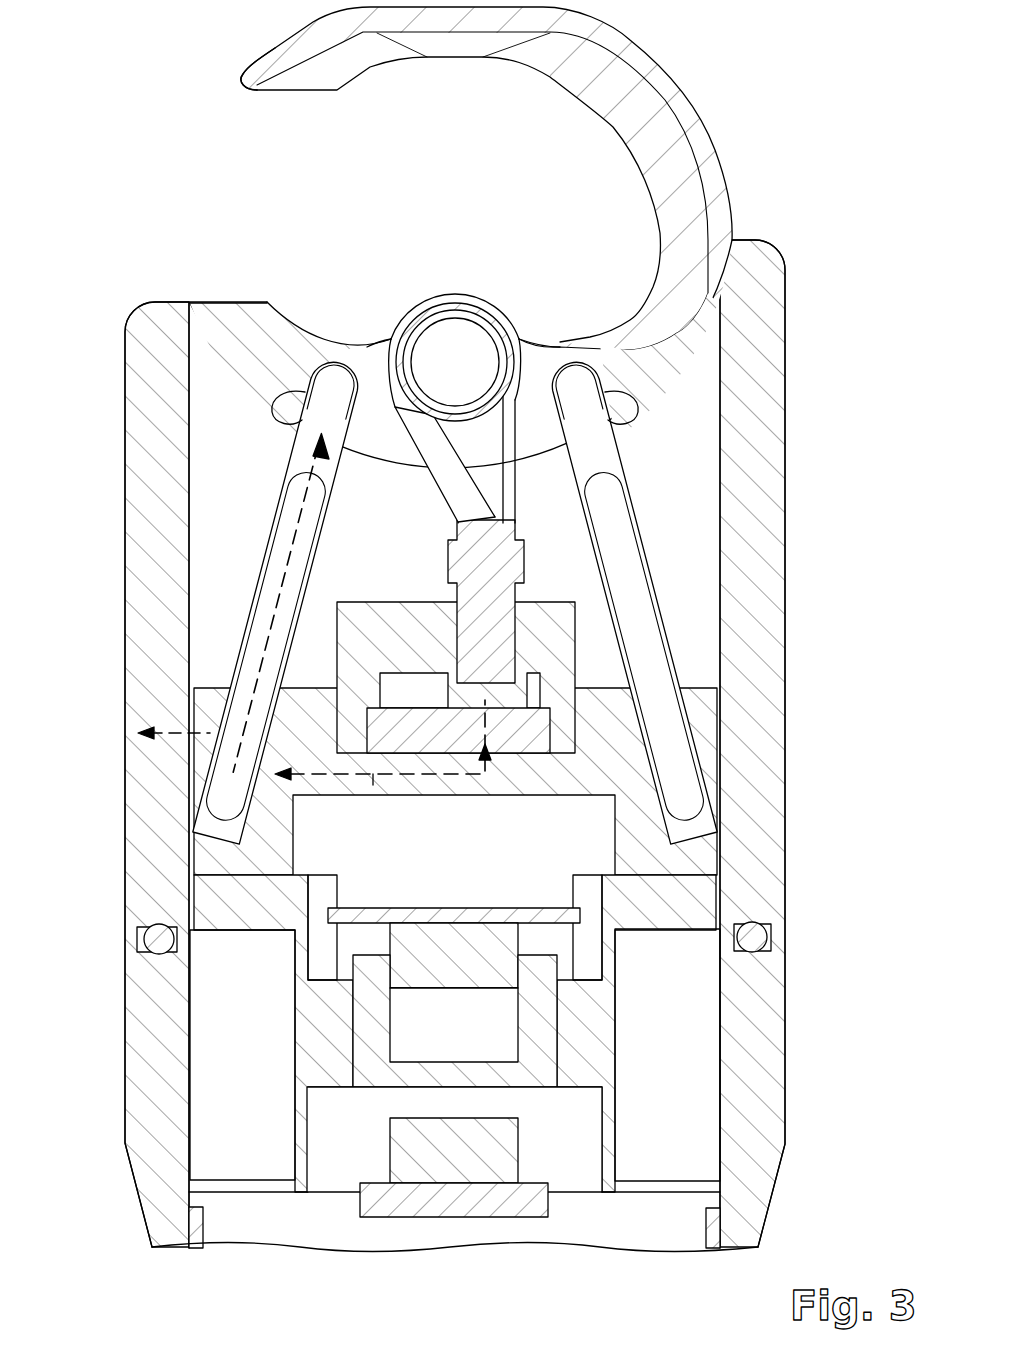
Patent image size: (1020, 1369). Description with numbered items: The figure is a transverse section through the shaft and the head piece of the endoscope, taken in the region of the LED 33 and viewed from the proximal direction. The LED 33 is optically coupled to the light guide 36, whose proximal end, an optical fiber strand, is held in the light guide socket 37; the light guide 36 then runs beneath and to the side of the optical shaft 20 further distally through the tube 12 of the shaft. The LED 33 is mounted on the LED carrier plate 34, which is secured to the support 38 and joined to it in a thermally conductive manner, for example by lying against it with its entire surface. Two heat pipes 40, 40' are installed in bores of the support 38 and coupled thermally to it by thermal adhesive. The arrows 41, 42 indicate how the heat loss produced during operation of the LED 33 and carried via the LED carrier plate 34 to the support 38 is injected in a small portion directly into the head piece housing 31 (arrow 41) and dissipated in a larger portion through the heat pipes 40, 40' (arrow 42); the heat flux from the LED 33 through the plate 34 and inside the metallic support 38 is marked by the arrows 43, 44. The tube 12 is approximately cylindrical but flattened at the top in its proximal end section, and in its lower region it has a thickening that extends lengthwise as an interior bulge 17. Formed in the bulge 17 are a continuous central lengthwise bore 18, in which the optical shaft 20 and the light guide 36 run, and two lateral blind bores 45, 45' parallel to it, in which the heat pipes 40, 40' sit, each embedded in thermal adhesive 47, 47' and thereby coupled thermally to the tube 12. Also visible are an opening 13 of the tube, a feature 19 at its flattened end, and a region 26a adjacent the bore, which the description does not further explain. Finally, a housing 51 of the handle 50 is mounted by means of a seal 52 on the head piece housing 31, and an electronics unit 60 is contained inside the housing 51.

The tube 12 is at (695, 123).
The hook opening 13 is at (472, 156).
The interior bulge 17 is at (451, 297).
The central lengthwise bore 18 is at (527, 336).
The hook tip 19 is at (242, 170).
The optical shaft 20 is at (476, 320).
The pin receptacle 26a is at (408, 333).
The head piece housing 31 is at (148, 638).
The LED 33 is at (487, 692).
The LED carrier plate 34 is at (545, 753).
The light guide 36 is at (488, 483).
The light guide socket 37 is at (553, 622).
The support 38 is at (215, 855).
The heat pipe 40 is at (275, 603).
The heat pipe 40' is at (634, 603).
The arrow 41 is at (173, 730).
The arrow 42 is at (288, 570).
The arrow 43 is at (487, 727).
The arrow 44 is at (373, 785).
The blind bore 45 is at (256, 418).
The blind bore 45' is at (659, 418).
The thermal adhesive 47 is at (362, 314).
The thermal adhesive 47' is at (554, 310).
The handle 50 is at (804, 1180).
The housing 51 is at (762, 1077).
The seal 52 is at (137, 943).
The electronics unit 60 is at (250, 1140).